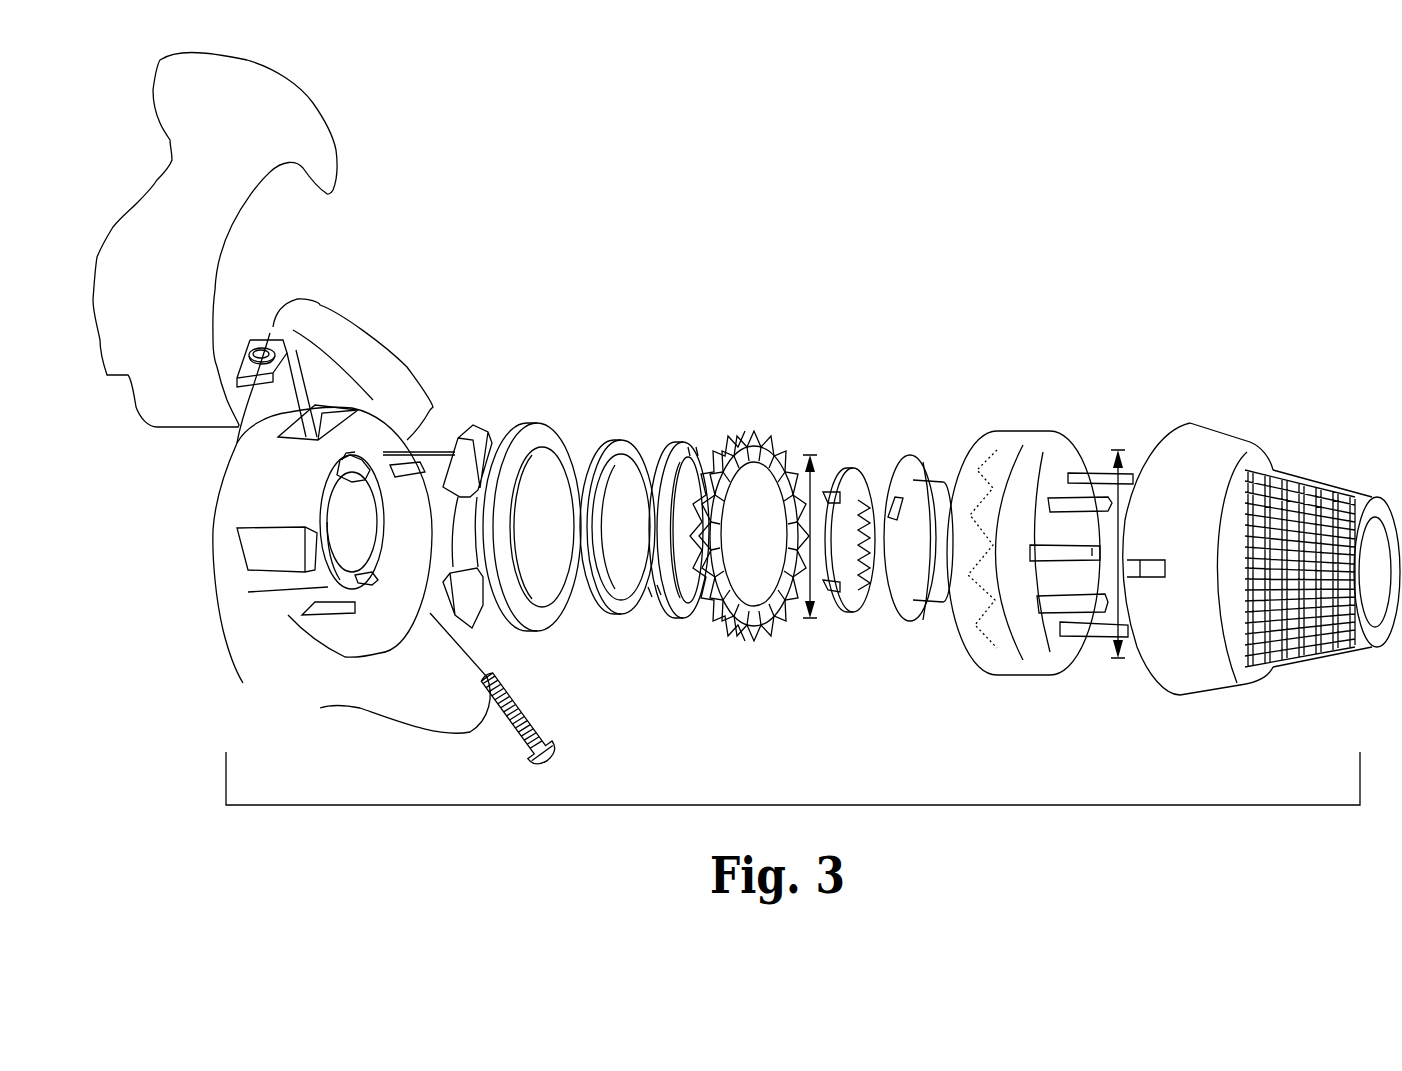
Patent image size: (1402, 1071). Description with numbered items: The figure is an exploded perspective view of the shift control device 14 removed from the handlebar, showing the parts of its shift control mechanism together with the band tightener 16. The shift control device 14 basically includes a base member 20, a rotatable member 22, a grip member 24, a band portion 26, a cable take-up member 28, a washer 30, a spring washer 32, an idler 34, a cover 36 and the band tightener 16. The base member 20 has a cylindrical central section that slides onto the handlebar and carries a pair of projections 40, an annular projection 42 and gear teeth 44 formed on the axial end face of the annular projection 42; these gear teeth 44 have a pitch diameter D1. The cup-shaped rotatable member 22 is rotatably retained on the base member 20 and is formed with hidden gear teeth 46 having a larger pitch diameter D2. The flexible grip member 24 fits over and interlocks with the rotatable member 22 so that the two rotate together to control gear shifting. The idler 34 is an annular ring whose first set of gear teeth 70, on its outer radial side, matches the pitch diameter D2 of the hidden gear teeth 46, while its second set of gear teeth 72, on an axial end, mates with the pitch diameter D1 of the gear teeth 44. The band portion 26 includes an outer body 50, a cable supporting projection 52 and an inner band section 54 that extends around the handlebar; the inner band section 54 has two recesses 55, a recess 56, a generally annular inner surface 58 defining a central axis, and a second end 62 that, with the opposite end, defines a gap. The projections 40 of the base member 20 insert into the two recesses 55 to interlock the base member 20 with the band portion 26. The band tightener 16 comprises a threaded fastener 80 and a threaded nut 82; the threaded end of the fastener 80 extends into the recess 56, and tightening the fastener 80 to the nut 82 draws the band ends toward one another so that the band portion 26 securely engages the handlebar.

The shift control device 14 is at (881, 222).
The band tightener 16 is at (351, 547).
The base member 20 is at (935, 497).
The rotatable member 22 is at (1023, 565).
The grip member 24 is at (1205, 445).
The band portion 26 is at (384, 322).
The cable take-up member 28 is at (553, 437).
The washer 30 is at (632, 447).
The spring washer 32 is at (686, 450).
The idler 34 is at (756, 536).
The cover 36 is at (293, 147).
The projections 40 is at (843, 482).
The annular projection 42 is at (919, 550).
The gear teeth 44 is at (873, 564).
The hidden gear teeth 46 is at (995, 672).
The outer body 50 is at (342, 645).
The cable supporting projection 52 is at (318, 320).
The inner band section 54 is at (331, 515).
The recesses 55 is at (343, 483).
The recess 56 is at (297, 430).
The inner surface 58 is at (352, 515).
The second end 62 is at (425, 448).
The first set of gear teeth 70 is at (724, 615).
The second set of gear teeth 72 is at (778, 617).
The threaded fastener 80 is at (388, 673).
The threaded nut 82 is at (258, 689).
The pitch diameter D1 is at (812, 484).
The pitch diameter D2 is at (1098, 455).